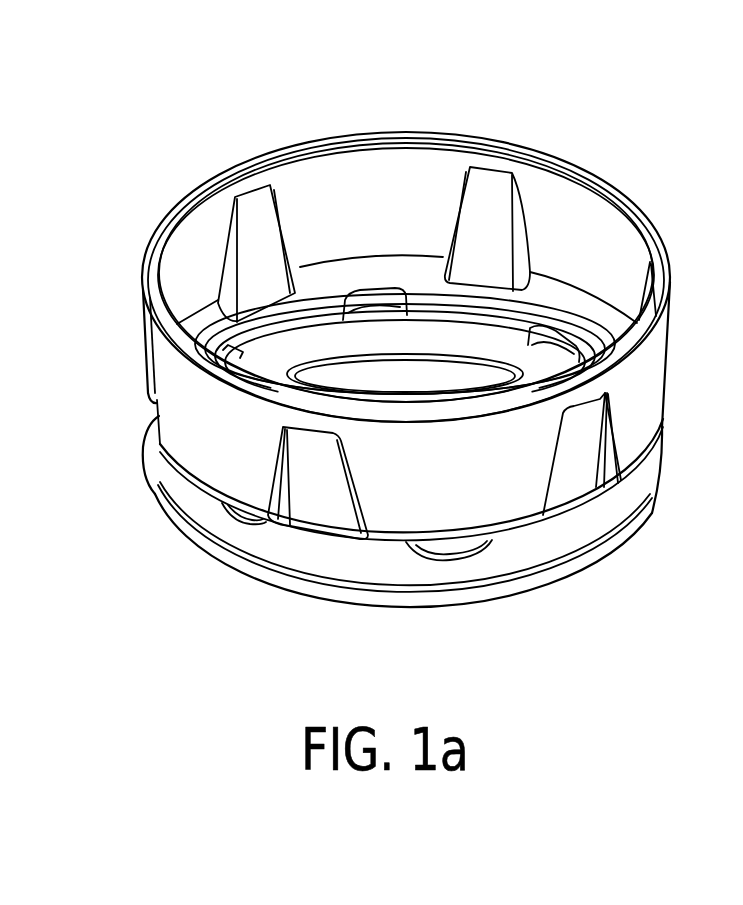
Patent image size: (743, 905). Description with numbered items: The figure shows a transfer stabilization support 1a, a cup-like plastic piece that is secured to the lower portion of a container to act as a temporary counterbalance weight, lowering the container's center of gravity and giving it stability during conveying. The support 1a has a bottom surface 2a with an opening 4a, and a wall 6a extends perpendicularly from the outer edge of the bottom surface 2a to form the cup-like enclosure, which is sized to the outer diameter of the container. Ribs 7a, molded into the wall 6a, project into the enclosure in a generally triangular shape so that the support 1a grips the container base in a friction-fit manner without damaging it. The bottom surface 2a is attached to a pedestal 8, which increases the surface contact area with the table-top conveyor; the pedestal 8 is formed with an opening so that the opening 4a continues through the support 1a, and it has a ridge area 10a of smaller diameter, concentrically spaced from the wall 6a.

The transfer stabilization support 1a is at (139, 150).
The wall 6a is at (369, 181).
The rib 7a is at (478, 221).
The opening 4a is at (478, 378).
The bottom surface 2a is at (249, 524).
The pedestal 8 is at (327, 596).
The ridge area 10a is at (405, 565).